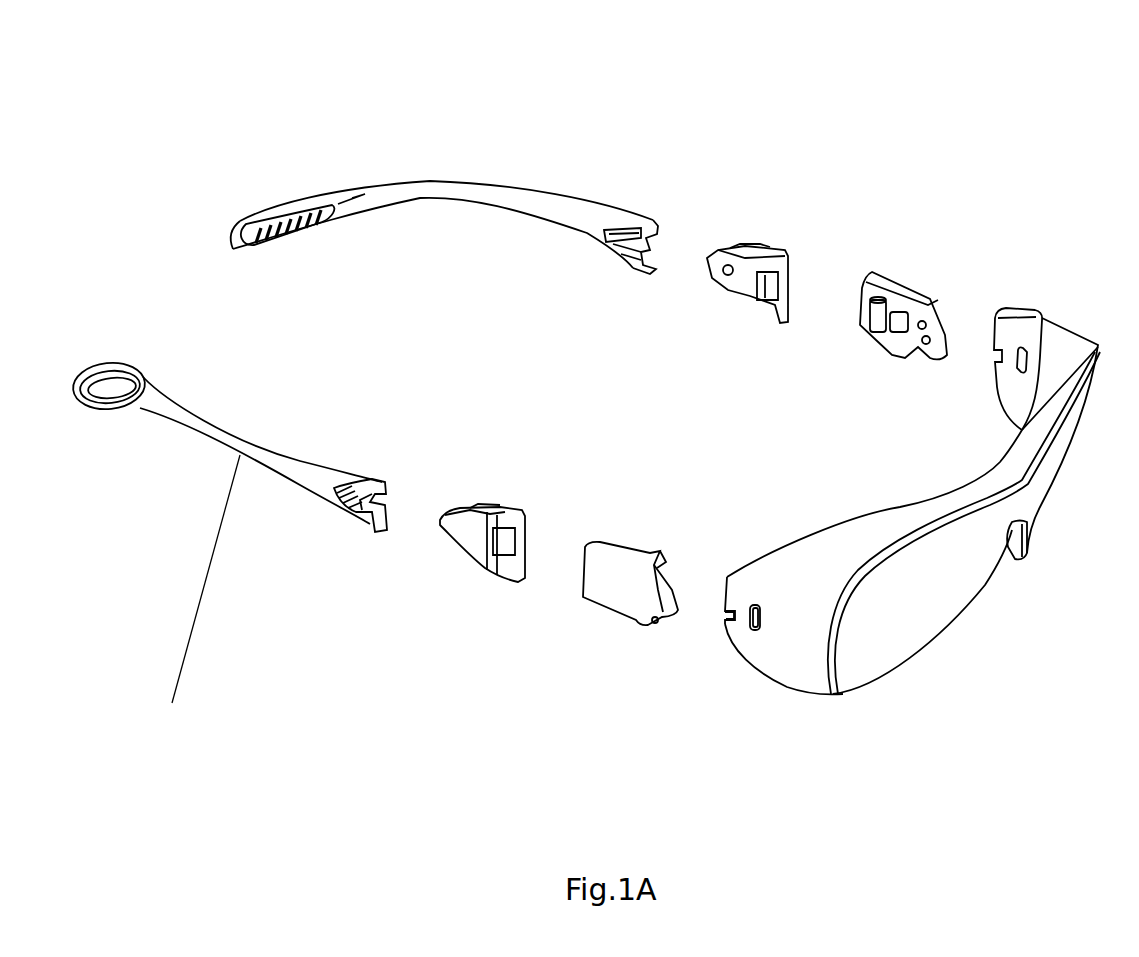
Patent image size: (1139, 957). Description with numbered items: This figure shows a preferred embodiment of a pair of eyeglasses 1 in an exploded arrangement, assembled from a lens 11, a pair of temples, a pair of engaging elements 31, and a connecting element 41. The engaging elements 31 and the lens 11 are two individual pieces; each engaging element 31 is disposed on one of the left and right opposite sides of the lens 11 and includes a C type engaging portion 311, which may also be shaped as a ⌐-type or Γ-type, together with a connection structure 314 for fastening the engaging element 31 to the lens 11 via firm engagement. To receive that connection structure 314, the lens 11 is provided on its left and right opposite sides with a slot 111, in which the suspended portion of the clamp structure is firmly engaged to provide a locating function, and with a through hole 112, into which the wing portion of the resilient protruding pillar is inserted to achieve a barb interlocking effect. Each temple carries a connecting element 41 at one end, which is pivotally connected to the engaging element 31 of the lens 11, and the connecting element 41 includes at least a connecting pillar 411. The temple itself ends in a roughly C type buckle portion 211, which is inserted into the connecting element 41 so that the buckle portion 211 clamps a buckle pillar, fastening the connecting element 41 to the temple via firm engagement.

The pair of eyeglasses 1 is at (236, 53).
The lens 11 is at (870, 660).
The slot 111 is at (727, 628).
The through hole 112 is at (760, 630).
The buckle portion 211 is at (372, 530).
The engaging element 31 is at (615, 590).
The C type engaging portion 311 is at (878, 308).
The connection structure 314 is at (900, 318).
The connecting element 41 is at (470, 540).
The connecting pillar 411 is at (787, 275).